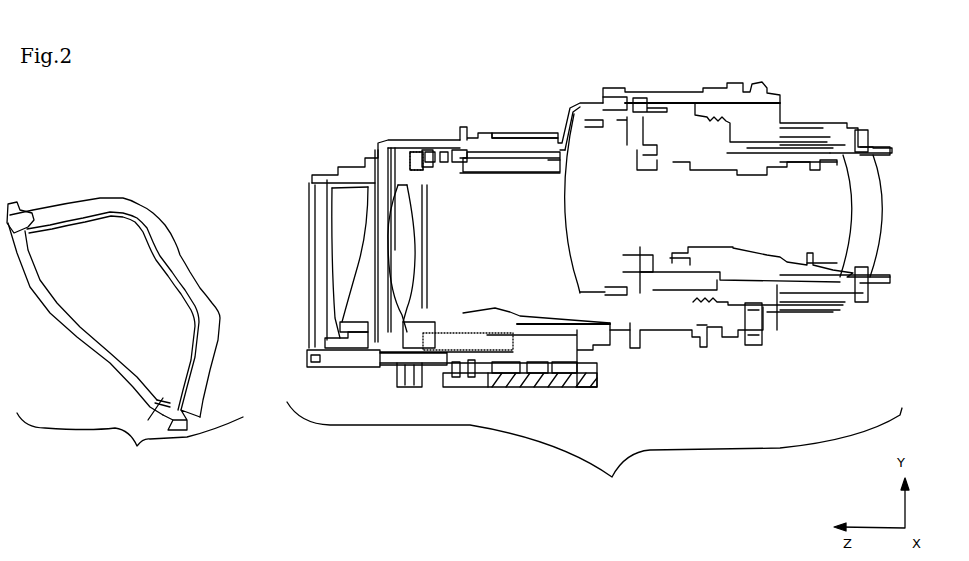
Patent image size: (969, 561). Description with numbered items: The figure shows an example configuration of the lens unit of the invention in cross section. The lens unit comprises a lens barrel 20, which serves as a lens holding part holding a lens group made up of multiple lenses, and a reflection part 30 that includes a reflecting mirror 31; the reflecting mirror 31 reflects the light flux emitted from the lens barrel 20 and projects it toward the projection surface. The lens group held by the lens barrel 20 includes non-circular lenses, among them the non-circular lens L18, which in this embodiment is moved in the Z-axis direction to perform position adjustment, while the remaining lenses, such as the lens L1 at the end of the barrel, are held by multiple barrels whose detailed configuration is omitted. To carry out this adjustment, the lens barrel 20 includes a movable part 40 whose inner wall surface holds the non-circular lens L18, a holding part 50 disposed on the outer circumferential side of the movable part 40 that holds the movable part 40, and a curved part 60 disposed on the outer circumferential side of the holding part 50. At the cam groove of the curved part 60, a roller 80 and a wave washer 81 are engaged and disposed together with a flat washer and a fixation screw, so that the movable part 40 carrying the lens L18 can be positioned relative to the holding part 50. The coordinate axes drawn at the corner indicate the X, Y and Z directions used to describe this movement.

The lens barrel 20 is at (594, 290).
The reflection part 30 is at (125, 334).
The reflecting mirror 31 is at (159, 416).
The movable part 40 is at (464, 126).
The holding part 50 is at (528, 133).
The curved part 60 is at (545, 390).
The roller 80 is at (498, 390).
The wave washer 81 is at (478, 390).
The lens L1 is at (880, 203).
The non-circular lens L18 is at (410, 386).